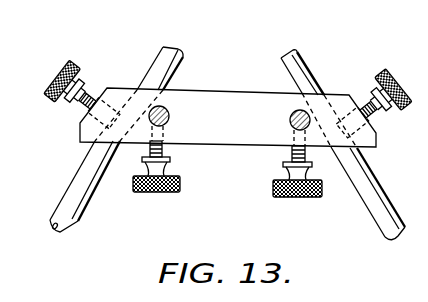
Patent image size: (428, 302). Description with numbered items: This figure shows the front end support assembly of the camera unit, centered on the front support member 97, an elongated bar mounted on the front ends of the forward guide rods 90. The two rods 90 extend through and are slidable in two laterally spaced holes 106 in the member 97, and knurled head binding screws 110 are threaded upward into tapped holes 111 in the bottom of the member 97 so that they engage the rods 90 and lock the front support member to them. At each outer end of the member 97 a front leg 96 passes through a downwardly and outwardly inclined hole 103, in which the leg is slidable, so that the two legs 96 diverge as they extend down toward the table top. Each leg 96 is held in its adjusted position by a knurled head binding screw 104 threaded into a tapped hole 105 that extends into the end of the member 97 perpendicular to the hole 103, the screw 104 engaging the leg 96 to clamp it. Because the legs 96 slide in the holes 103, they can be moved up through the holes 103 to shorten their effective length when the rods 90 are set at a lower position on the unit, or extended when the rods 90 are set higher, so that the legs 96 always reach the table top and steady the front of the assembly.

The forward guide rod 90 is at (171, 117).
The front leg 96 is at (78, 219).
The front support member 97 is at (207, 143).
The inclined hole 103 is at (129, 101).
The knurled head binding screw 104 is at (79, 78).
The tapped hole 105 is at (87, 143).
The hole 106 is at (165, 108).
The knurled head binding screw 110 is at (173, 193).
The tapped hole 111 is at (163, 136).